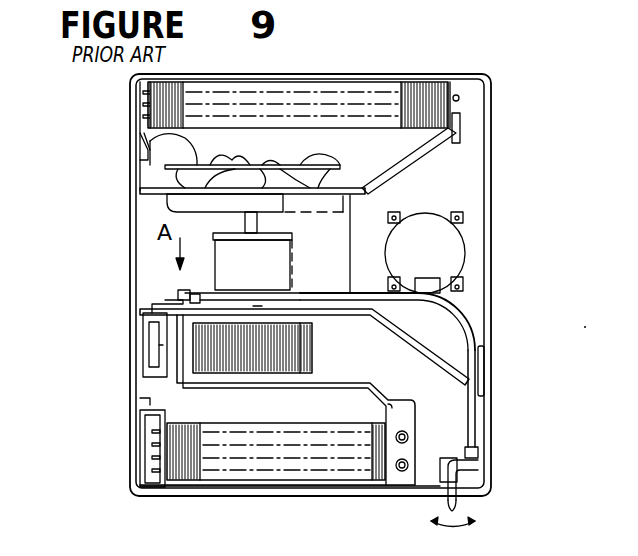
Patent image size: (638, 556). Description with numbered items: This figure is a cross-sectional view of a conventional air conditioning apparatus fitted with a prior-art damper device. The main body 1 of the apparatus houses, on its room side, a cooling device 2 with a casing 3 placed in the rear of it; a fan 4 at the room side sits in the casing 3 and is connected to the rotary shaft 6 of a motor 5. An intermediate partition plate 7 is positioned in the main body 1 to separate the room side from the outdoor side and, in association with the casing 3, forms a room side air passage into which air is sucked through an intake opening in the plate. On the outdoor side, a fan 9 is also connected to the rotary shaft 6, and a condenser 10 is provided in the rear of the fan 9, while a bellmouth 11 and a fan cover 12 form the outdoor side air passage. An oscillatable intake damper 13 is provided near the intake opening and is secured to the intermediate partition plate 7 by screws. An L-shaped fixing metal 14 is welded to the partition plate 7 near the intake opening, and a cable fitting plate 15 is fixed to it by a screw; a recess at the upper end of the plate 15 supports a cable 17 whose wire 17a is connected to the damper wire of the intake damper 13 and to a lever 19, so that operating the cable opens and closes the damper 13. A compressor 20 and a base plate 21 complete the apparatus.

The main body of an air conditioning apparatus 1 is at (493, 138).
The cooling device 2 is at (277, 442).
The casing 3 is at (197, 388).
The fan at the room side 4 is at (303, 345).
The motor 5 is at (213, 258).
The rotary shaft 6 is at (256, 306).
The intermediate partition plate 7 is at (403, 328).
The fan 9 is at (157, 137).
The condenser 10 is at (372, 100).
The bellmouth 11 is at (166, 197).
The fan cover 12 is at (440, 150).
The intake damper 13 is at (152, 385).
The fixing metal 14 is at (120, 292).
The cable fitting plate 15 is at (177, 295).
The cable 17 is at (475, 347).
The wire 17a is at (183, 302).
The lever 19 is at (473, 468).
The compressor 20 is at (443, 253).
The base plate 21 is at (491, 323).